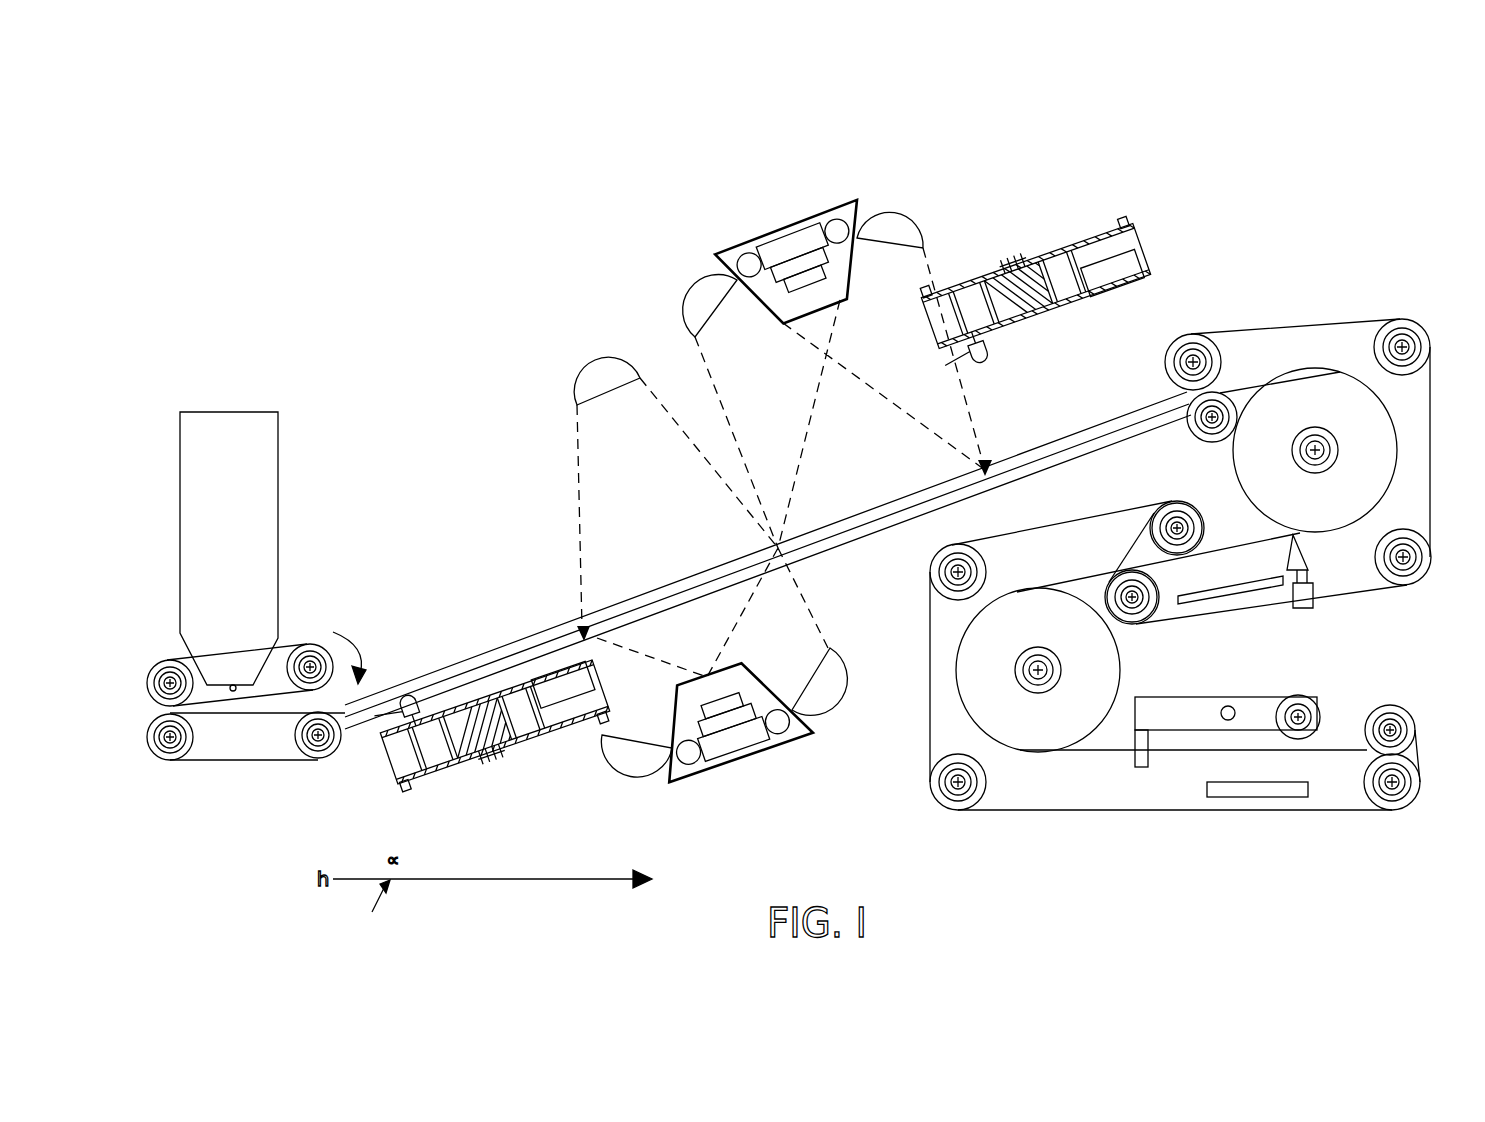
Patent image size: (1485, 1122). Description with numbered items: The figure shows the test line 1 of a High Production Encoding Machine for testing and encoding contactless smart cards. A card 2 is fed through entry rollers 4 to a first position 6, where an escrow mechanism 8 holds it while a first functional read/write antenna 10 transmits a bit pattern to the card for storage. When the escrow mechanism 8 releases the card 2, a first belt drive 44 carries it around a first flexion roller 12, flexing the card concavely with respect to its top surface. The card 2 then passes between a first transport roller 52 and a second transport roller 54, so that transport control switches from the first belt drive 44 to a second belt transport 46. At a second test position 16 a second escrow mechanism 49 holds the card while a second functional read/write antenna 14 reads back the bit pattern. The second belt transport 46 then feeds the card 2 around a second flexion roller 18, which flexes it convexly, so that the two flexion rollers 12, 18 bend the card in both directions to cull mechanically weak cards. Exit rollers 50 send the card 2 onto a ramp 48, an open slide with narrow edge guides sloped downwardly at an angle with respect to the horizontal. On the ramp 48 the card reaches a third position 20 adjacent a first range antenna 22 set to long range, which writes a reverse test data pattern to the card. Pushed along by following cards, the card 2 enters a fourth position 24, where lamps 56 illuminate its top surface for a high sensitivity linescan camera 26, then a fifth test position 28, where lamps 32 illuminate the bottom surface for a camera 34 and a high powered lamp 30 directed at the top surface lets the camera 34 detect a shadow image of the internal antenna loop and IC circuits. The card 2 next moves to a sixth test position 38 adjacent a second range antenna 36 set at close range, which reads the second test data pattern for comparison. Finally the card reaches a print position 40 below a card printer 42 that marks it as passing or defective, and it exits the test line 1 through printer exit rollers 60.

The test line 1 is at (522, 416).
The card 2 is at (553, 640).
The entry rollers 4 is at (1403, 755).
The first position 6 is at (1205, 755).
The escrow mechanism 8 is at (1197, 695).
The first functional read/write antenna 10 is at (1275, 797).
The first flexion roller 12 is at (1062, 737).
The second functional read/write antenna 14 is at (1258, 590).
The second test position 16 is at (1223, 567).
The second flexion roller 18 is at (1380, 428).
The third position 20 is at (1070, 434).
The first range antenna 22 is at (1097, 235).
The fourth position 24 is at (898, 500).
The linescan camera 26 is at (812, 215).
The fifth test position 28 is at (707, 572).
The high powered lamp 30 is at (610, 357).
The lamps 32 is at (625, 773).
The camera 34 is at (770, 753).
The second range antenna 36 is at (448, 770).
The sixth test position 38 is at (477, 660).
The print position 40 is at (262, 702).
The card printer 42 is at (247, 412).
The first belt drive 44 is at (997, 810).
The second belt transport 46 is at (1433, 470).
The ramp 48 is at (1150, 402).
The second escrow mechanism 49 is at (1308, 575).
The exit rollers 50 is at (1192, 335).
The first transport roller 52 is at (1153, 513).
The second transport roller 54 is at (1120, 573).
The lamps 56 is at (692, 288).
The printer exit rollers 60 is at (257, 764).